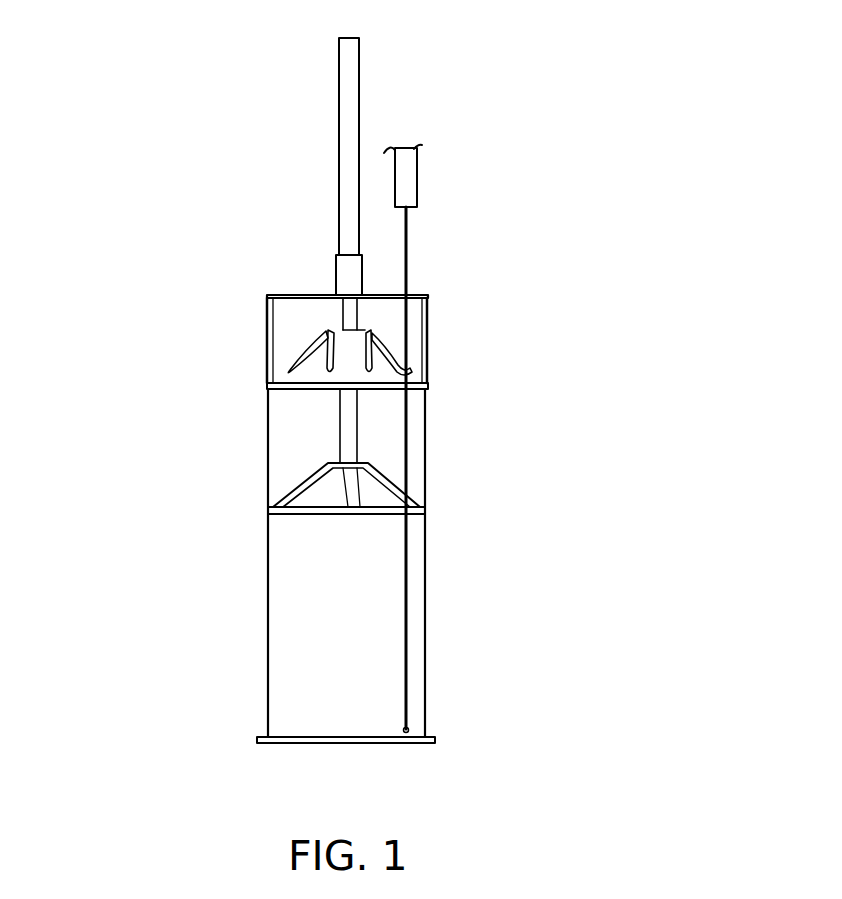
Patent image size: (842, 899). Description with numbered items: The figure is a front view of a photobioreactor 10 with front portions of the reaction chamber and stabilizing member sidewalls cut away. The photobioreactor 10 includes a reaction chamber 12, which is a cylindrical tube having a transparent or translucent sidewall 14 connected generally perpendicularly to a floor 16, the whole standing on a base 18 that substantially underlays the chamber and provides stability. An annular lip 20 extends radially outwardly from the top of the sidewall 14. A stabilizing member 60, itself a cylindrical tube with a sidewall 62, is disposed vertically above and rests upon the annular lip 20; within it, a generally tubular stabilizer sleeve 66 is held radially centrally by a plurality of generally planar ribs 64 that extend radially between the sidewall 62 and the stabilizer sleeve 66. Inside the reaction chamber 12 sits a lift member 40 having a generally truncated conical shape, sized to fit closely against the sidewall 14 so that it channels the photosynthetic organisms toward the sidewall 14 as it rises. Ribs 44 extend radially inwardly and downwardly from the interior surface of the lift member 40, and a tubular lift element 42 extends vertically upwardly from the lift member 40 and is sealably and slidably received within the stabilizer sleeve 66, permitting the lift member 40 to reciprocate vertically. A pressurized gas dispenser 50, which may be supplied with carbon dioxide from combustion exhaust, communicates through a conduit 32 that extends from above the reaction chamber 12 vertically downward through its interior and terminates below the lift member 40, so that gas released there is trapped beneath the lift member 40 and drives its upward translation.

The photobioreactor 10 is at (148, 235).
The reaction chamber 12 is at (317, 588).
The sidewall 14 is at (265, 622).
The floor 16 is at (310, 736).
The base 18 is at (436, 737).
The annular lip 20 is at (428, 387).
The conduit 32 is at (410, 260).
The lift member 40 is at (398, 480).
The lift element 42 is at (350, 432).
The ribs 44 is at (315, 472).
The pressurized gas dispenser 50 is at (407, 177).
The stabilizing member 60 is at (327, 286).
The sidewall 62 is at (265, 370).
The ribs 64 is at (328, 332).
The stabilizer sleeve 66 is at (352, 103).